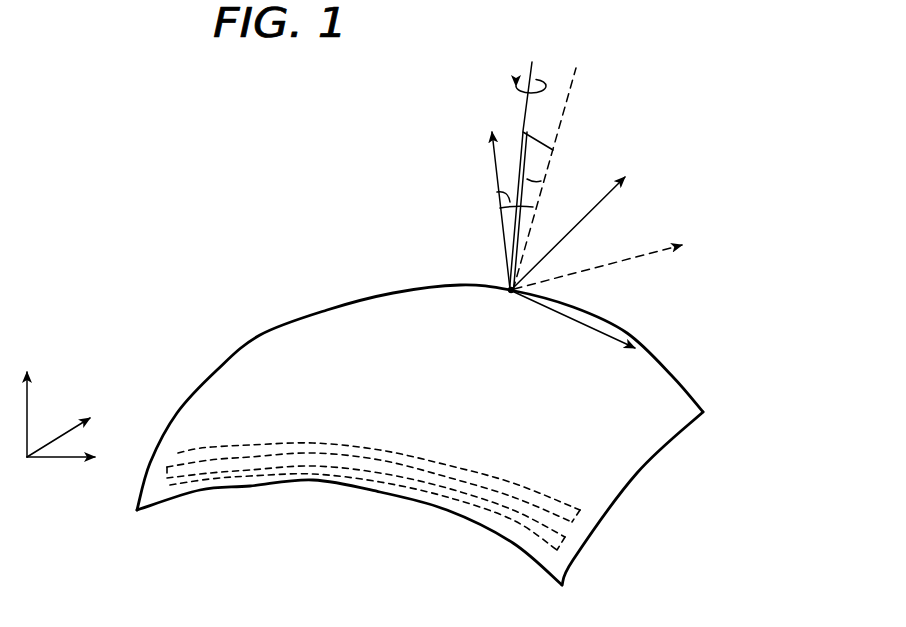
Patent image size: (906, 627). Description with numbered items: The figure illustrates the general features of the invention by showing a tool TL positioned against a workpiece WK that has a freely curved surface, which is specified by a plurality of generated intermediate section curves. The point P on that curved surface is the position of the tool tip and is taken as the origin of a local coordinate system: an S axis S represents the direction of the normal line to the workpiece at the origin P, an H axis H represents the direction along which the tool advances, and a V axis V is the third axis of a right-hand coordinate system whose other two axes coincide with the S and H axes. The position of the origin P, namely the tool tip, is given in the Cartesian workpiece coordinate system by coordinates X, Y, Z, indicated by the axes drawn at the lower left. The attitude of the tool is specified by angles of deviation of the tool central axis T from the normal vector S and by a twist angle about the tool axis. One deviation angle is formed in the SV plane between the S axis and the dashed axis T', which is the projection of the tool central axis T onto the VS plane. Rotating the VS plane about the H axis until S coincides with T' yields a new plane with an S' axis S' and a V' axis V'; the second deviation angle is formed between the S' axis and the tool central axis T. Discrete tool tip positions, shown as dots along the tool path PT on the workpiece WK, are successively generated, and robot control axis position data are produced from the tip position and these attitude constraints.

The tool TL is at (523, 130).
The tool central axis T is at (555, 72).
The axis T' is at (571, 145).
The S' axis S' is at (553, 173).
The S axis S is at (496, 196).
The V axis V is at (578, 226).
The V' axis V' is at (611, 261).
The H axis H is at (576, 334).
The point P is at (505, 304).
The workpiece WK is at (637, 473).
The tool path PT is at (202, 477).
The X coordinate X is at (71, 458).
The Y coordinate Y is at (67, 430).
The Z coordinate Z is at (27, 400).